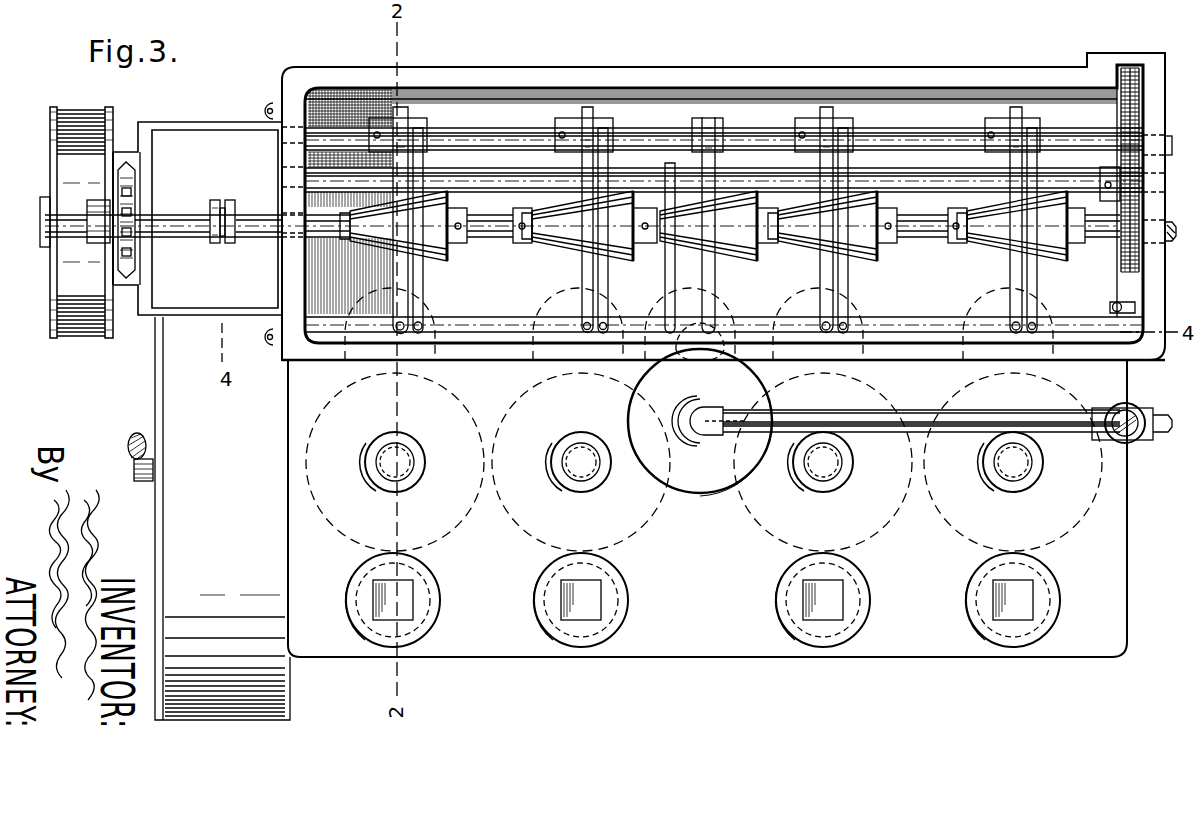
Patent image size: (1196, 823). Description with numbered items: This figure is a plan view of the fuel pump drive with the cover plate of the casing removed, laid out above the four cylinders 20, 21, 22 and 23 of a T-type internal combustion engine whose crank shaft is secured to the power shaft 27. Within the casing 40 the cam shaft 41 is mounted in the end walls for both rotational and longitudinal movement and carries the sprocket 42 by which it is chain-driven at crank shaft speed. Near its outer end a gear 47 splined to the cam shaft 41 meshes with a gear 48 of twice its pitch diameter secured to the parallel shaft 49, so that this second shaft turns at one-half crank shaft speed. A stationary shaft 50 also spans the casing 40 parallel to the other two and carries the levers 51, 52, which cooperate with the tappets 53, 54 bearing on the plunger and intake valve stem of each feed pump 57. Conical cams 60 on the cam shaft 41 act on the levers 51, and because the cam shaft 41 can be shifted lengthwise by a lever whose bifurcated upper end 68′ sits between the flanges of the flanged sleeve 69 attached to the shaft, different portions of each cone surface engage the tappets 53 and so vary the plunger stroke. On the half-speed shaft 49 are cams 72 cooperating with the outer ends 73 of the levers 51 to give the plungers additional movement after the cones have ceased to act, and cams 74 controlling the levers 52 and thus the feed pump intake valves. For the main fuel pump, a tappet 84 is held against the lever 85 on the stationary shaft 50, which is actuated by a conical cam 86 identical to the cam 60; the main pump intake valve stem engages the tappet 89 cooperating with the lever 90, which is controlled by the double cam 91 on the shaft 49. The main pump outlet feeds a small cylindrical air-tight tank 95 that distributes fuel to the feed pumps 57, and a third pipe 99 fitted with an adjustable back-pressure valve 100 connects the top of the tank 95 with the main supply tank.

The cylinder 20 is at (1064, 540).
The cylinder 21 is at (872, 536).
The cylinder 22 is at (640, 531).
The cylinder 23 is at (456, 531).
The power shaft 27 is at (133, 456).
The casing 40 is at (494, 68).
The cam shaft 41 is at (248, 214).
The sprocket 42 is at (126, 160).
The gear 47 is at (1130, 274).
The gear 48 is at (1136, 90).
The shaft 49 is at (921, 140).
The stationary shaft 50 is at (505, 178).
The lever 51 is at (393, 272).
The lever 52 is at (424, 283).
The tappet 53 is at (393, 332).
The tappet 54 is at (445, 331).
The feed pump 57 is at (560, 302).
The conical cam 60 is at (438, 205).
The bifurcated upper end 68′ is at (217, 200).
The flanged sleeve 69 is at (231, 200).
The cam 72 is at (418, 128).
The outer end of lever 73 is at (397, 107).
The cam 74 is at (430, 130).
The tappet 84 is at (700, 351).
The lever 85 is at (676, 268).
The conical cam 86 is at (740, 240).
The tappet 89 is at (724, 352).
The lever 90 is at (708, 288).
The double cam 91 is at (708, 117).
The air-tight tank 95 is at (719, 488).
The pipe 99 is at (913, 413).
The adjustable back-pressure valve 100 is at (1130, 441).